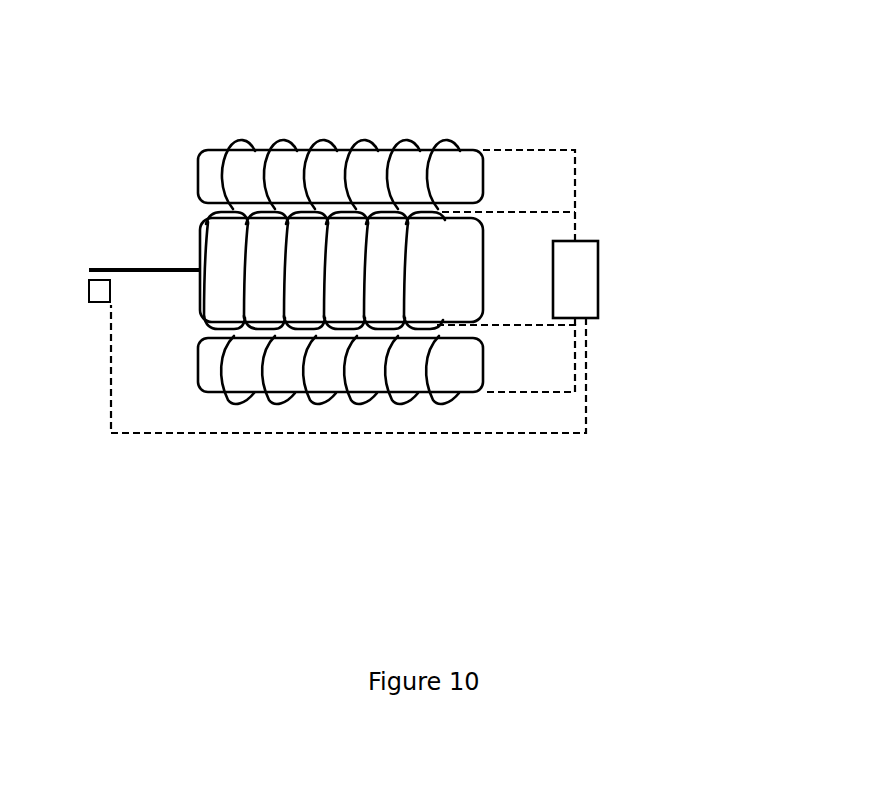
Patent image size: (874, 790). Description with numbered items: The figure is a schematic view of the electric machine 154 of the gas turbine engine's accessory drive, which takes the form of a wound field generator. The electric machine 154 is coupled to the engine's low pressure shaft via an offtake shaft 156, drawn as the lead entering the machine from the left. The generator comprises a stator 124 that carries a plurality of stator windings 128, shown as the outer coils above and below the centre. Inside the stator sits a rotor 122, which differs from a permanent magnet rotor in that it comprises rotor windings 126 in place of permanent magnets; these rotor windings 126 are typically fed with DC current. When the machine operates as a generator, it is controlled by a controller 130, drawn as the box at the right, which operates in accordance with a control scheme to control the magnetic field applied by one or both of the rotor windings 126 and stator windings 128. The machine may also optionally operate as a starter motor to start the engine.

The rotor 122 is at (405, 323).
The stator 124 is at (470, 150).
The rotor windings 126 is at (483, 300).
The stator windings 128 is at (318, 142).
The controller 130 is at (598, 279).
The electric machine 154 is at (616, 184).
The offtake shaft 156 is at (127, 270).